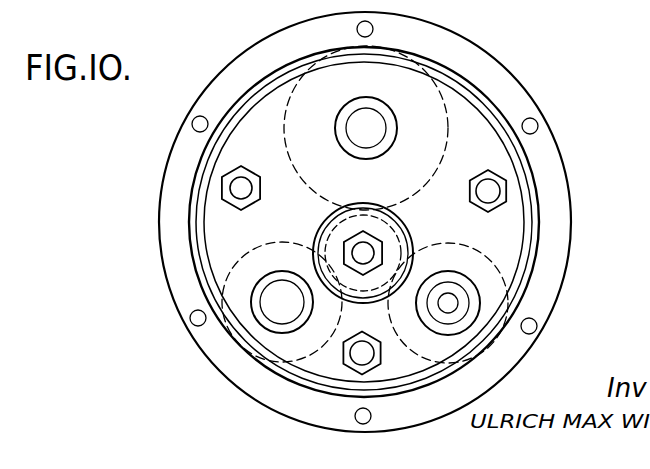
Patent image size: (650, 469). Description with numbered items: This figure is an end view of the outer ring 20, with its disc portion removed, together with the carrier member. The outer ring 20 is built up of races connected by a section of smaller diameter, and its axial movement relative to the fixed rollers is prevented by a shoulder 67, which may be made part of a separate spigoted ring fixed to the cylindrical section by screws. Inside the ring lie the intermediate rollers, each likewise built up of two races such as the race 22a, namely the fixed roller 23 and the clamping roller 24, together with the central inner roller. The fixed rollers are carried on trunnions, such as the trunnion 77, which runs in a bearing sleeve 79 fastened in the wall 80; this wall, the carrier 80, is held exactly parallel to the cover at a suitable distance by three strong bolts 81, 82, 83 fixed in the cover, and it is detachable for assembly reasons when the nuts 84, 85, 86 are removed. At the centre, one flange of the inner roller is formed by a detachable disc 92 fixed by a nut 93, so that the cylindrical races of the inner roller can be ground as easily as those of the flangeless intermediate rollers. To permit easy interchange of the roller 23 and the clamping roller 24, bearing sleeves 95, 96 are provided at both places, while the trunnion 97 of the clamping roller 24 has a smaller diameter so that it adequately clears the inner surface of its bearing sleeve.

The outer ring 20 is at (313, 33).
The race of roller 22a is at (440, 120).
The roller 23 is at (233, 266).
The clamping roller 24 is at (483, 282).
The shoulder 67 is at (503, 122).
The trunnion 77 is at (350, 122).
The bearing sleeve 79 is at (383, 110).
The wall (carrier) 80 is at (505, 165).
The bolt 81 is at (362, 357).
The bolt 82 is at (236, 190).
The bolt 83 is at (490, 193).
The nut 84 is at (343, 367).
The nut 85 is at (232, 178).
The nut 86 is at (505, 202).
The disc 92 is at (368, 284).
The nut 93 is at (347, 256).
The bearing sleeve 95 is at (252, 306).
The bearing sleeve 96 is at (468, 305).
The trunnion of clamping roller 97 is at (441, 303).